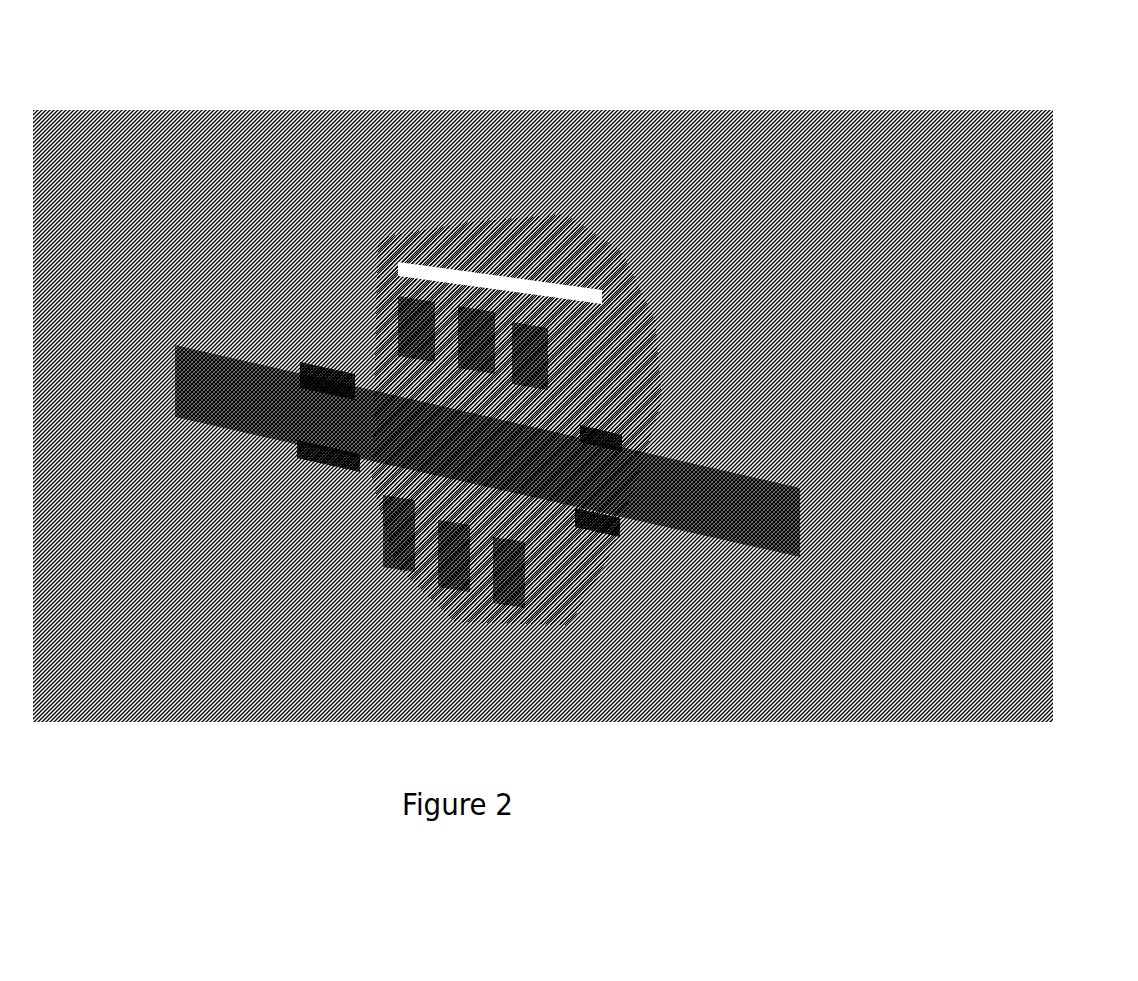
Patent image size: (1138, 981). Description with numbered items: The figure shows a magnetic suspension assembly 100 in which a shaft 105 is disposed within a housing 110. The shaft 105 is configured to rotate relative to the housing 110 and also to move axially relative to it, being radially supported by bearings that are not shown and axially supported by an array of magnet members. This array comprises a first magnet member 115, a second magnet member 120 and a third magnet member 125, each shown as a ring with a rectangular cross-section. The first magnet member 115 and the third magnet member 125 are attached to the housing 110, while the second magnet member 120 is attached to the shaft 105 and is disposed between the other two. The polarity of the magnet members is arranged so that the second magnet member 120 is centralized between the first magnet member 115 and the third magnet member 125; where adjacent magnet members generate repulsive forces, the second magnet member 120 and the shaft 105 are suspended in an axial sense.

The magnetic suspension assembly 100 is at (250, 800).
The shaft 105 is at (802, 517).
The housing 110 is at (463, 247).
The first magnet member 115 is at (537, 342).
The second magnet member 120 is at (478, 325).
The third magnet member 125 is at (415, 312).